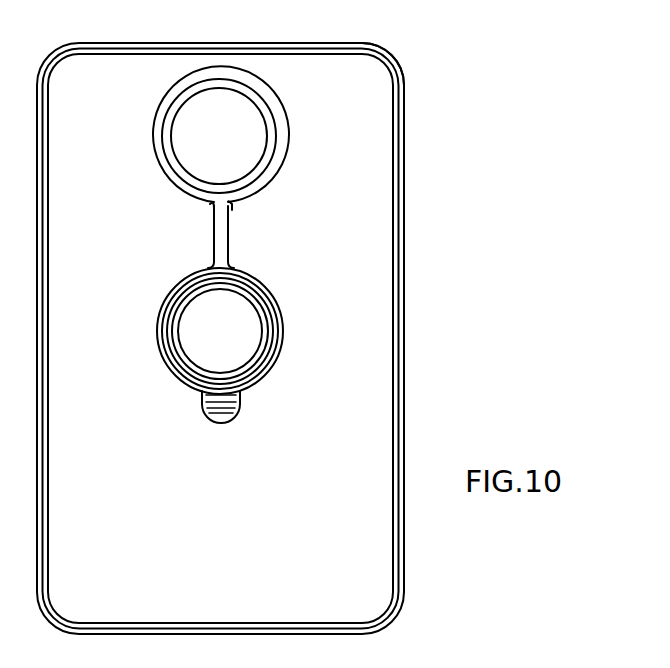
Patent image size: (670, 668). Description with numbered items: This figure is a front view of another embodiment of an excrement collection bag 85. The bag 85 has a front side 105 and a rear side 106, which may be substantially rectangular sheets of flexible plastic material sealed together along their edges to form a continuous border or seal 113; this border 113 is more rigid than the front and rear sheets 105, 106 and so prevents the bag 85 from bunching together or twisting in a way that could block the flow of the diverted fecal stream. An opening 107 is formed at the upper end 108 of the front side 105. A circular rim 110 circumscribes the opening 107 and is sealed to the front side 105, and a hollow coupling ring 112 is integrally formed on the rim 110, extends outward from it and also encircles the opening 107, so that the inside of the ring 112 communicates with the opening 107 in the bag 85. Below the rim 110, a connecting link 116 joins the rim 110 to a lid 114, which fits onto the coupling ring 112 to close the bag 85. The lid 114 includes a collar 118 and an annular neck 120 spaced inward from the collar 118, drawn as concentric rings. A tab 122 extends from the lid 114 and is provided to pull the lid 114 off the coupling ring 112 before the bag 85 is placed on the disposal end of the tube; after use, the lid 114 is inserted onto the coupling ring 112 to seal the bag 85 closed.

The collection bag 85 is at (474, 165).
The front side 105 is at (368, 363).
The rear side 106 is at (404, 305).
The opening 107 is at (243, 140).
The upper end 108 is at (322, 75).
The circular rim 110 is at (280, 123).
The hollow coupling ring 112 is at (257, 177).
The border or seal 113 is at (404, 97).
The lid 114 is at (278, 348).
The connecting link 116 is at (228, 242).
The collar 118 is at (278, 299).
The annular neck 120 is at (257, 368).
The tab 122 is at (230, 403).